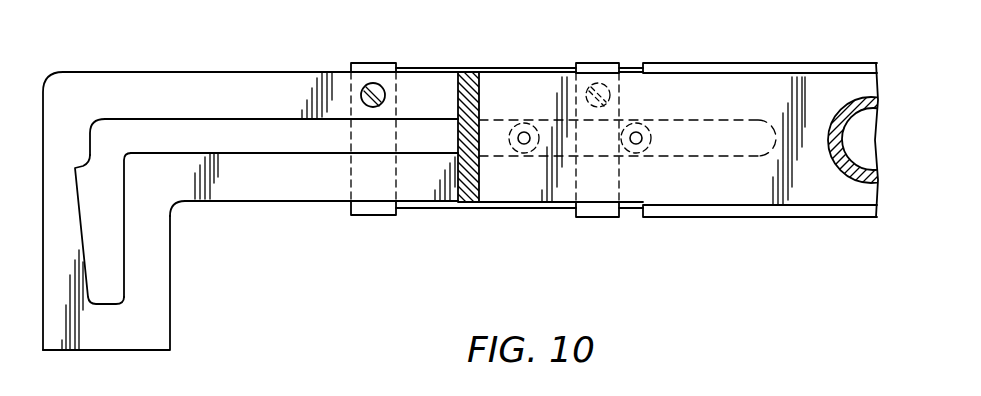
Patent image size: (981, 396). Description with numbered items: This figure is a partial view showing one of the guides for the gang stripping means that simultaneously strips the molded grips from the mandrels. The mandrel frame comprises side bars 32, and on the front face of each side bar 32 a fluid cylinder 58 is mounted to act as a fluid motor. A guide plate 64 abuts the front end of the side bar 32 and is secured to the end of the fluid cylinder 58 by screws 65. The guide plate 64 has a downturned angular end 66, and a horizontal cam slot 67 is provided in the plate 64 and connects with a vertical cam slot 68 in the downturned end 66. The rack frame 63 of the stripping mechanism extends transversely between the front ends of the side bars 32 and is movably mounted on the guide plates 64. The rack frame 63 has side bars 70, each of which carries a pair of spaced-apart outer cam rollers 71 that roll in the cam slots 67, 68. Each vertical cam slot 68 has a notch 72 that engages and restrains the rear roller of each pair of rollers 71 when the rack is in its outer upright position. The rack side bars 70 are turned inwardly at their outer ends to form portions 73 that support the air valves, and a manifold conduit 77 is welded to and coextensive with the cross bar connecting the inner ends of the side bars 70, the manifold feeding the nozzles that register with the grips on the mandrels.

The side bars 32 is at (735, 70).
The fluid cylinders 58 is at (424, 70).
The rack frame 63 is at (551, 222).
The guide plates 64 is at (266, 72).
The screws 65 is at (374, 83).
The downturned angular ends 66 is at (165, 300).
The horizontal cam slots 67 is at (273, 147).
The vertical cam slots 68 is at (118, 213).
The side bars of rack frame 70 is at (660, 82).
The outer cam rollers 71 is at (517, 126).
The notch 72 is at (75, 168).
The inwardly turned portions 73 is at (462, 170).
The manifold conduit 77 is at (850, 172).